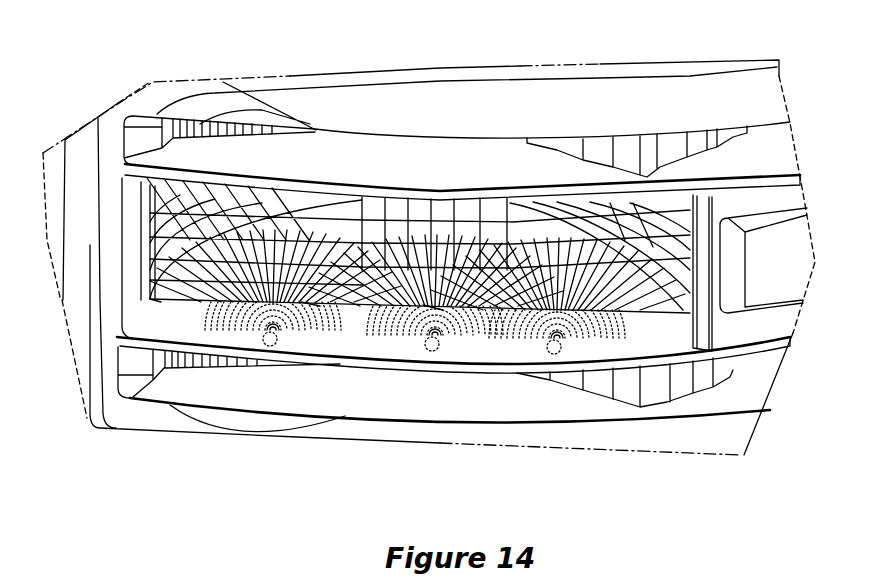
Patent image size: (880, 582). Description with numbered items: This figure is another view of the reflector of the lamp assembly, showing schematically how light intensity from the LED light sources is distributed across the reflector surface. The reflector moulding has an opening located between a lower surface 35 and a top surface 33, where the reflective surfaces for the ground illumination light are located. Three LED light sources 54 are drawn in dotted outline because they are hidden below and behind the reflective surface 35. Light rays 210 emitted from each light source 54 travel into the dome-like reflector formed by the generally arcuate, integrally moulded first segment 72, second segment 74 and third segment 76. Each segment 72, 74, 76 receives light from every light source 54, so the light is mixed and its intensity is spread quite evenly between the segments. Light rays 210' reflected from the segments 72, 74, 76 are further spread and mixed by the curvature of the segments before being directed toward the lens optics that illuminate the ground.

The top surface 33 is at (328, 150).
The first segment 72 is at (233, 187).
The second segment 74 is at (457, 217).
The third segment 76 is at (600, 243).
The reflected light rays 210' is at (432, 162).
The light rays 210 is at (415, 400).
The light source 54 is at (270, 335).
The lower surface 35 is at (198, 322).